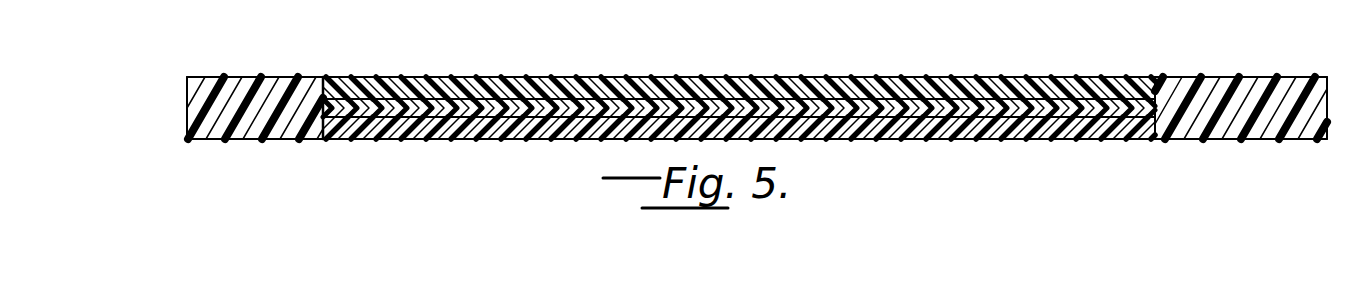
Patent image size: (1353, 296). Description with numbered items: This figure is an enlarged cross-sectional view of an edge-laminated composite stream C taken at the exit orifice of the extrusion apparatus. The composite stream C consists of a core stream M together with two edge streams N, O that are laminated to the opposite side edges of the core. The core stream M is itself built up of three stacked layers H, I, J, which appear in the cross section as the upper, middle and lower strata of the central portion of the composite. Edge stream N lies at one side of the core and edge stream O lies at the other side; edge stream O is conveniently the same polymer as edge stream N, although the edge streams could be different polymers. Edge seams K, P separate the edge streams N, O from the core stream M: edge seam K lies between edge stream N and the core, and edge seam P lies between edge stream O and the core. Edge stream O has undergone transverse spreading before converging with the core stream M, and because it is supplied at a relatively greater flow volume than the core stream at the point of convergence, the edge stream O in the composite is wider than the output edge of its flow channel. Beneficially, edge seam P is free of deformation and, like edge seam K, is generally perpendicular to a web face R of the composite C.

The edge-laminated composite stream C is at (413, 78).
The layer H is at (915, 80).
The edge stream N is at (251, 145).
The edge seam K is at (335, 143).
The web face R is at (498, 142).
The layer I is at (970, 118).
The layer J is at (1013, 141).
The core stream M is at (1080, 139).
The edge seam P is at (1152, 140).
The edge stream O is at (1267, 139).